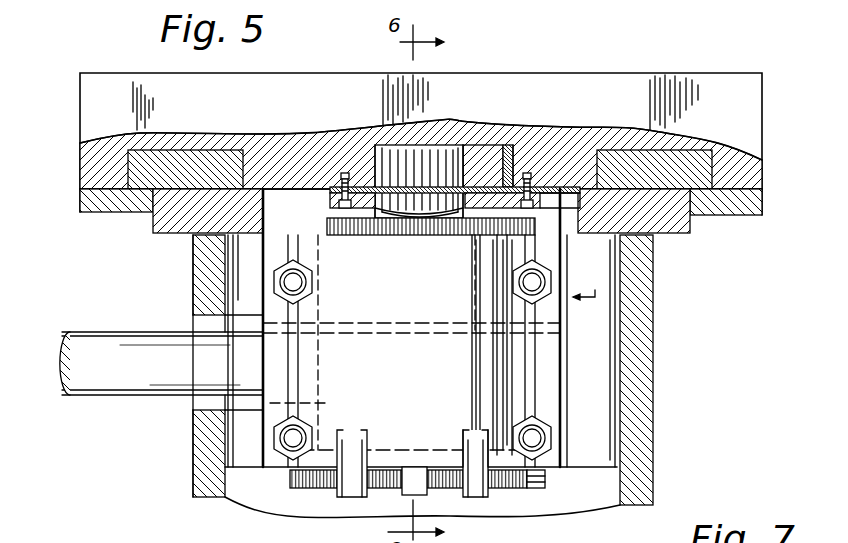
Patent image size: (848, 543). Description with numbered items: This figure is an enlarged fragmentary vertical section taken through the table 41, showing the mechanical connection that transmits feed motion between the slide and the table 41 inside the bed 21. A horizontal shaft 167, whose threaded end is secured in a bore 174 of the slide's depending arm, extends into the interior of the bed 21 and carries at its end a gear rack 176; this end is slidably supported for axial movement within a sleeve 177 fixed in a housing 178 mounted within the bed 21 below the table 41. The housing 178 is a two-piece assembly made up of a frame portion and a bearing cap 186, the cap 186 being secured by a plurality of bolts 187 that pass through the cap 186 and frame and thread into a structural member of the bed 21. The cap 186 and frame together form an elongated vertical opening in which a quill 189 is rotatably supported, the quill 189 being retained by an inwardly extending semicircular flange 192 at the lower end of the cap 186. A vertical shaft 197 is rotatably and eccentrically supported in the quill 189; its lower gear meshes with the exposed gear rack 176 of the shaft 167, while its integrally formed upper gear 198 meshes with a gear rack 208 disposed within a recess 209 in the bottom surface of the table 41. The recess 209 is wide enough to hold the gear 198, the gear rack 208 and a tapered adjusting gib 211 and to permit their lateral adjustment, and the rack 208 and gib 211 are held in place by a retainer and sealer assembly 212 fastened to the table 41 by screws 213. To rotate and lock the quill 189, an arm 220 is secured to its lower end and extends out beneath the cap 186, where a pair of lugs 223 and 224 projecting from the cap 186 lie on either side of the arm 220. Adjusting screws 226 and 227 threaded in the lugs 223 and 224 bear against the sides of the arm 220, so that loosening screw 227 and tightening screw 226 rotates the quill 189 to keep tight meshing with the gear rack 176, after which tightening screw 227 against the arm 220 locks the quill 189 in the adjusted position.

The table 41 is at (745, 118).
The bearing cap 186 is at (552, 353).
The bed 21 is at (200, 445).
The recess 209 is at (483, 150).
The tapered adjusting gib 211 is at (512, 150).
The gear rack 208 is at (505, 150).
The gear 198 is at (428, 160).
The vertical shaft 197 is at (422, 218).
The retainer and sealer assembly 212 is at (508, 210).
The screws 213 is at (345, 173).
The quill 189 is at (330, 223).
The gear rack 176 is at (412, 345).
The sleeve 177 is at (354, 325).
The bolts 187 is at (290, 285).
The housing 178 is at (587, 309).
The shaft 167 is at (86, 340).
The bore 174 is at (258, 373).
The adjusting screw 227 is at (318, 484).
The adjusting screw 226 is at (546, 481).
The lug 224 is at (350, 490).
The arm 220 is at (416, 485).
The lug 223 is at (470, 488).
The semicircular flange 192 is at (465, 460).